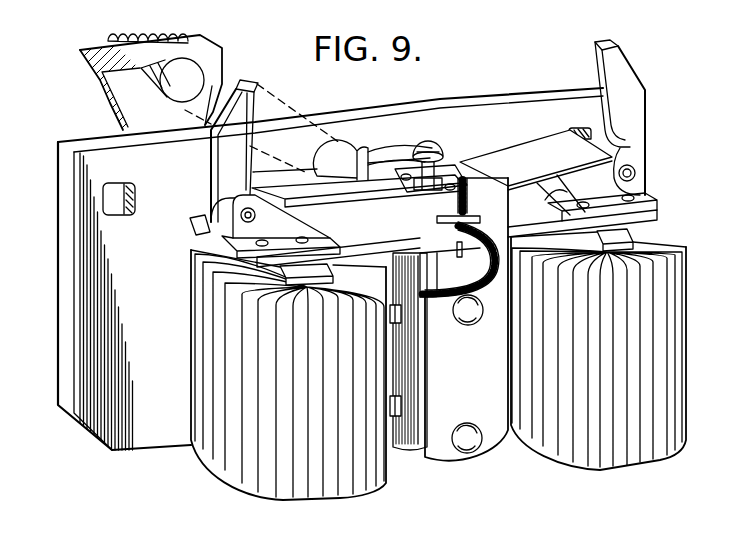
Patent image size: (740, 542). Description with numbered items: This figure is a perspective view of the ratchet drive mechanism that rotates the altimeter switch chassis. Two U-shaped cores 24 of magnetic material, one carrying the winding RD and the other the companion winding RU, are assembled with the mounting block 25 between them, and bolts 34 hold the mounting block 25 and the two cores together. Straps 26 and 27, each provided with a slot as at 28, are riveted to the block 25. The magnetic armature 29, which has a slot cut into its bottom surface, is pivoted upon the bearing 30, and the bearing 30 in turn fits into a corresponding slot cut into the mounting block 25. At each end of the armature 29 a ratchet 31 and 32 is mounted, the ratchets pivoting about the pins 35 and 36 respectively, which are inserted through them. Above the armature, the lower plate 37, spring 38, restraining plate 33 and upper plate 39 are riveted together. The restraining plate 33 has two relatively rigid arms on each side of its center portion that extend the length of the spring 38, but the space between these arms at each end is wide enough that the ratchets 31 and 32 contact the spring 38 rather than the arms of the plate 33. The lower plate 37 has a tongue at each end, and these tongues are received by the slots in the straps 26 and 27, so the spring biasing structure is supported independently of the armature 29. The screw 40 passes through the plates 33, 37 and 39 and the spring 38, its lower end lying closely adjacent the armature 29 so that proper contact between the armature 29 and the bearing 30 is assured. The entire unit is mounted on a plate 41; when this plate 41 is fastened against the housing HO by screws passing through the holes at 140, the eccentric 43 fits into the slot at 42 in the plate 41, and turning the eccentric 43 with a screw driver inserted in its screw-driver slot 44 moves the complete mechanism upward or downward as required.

The U-shaped core 24 is at (393, 460).
The mounting block 25 is at (450, 278).
The strap 26 is at (479, 457).
The strap 27 is at (384, 149).
The slot 28 is at (470, 220).
The armature 29 is at (660, 216).
The bearing 30 is at (461, 258).
The ratchet 31 is at (209, 172).
The ratchet 32 is at (641, 115).
The restraining plate 33 is at (317, 206).
The bolts 34 is at (401, 410).
The pin 35 is at (256, 217).
The pin 36 is at (636, 170).
The lower plate 37 is at (432, 214).
The spring 38 is at (518, 148).
The upper plate 39 is at (447, 171).
The screw 40 is at (425, 141).
The plate 41 is at (60, 270).
The slot 42 is at (373, 138).
The eccentric 43 is at (142, 46).
The screw-driver slot 44 is at (110, 30).
The holes 140 is at (118, 181).
The housing HO is at (125, 118).
The winding RD is at (296, 491).
The roller up RU is at (601, 465).